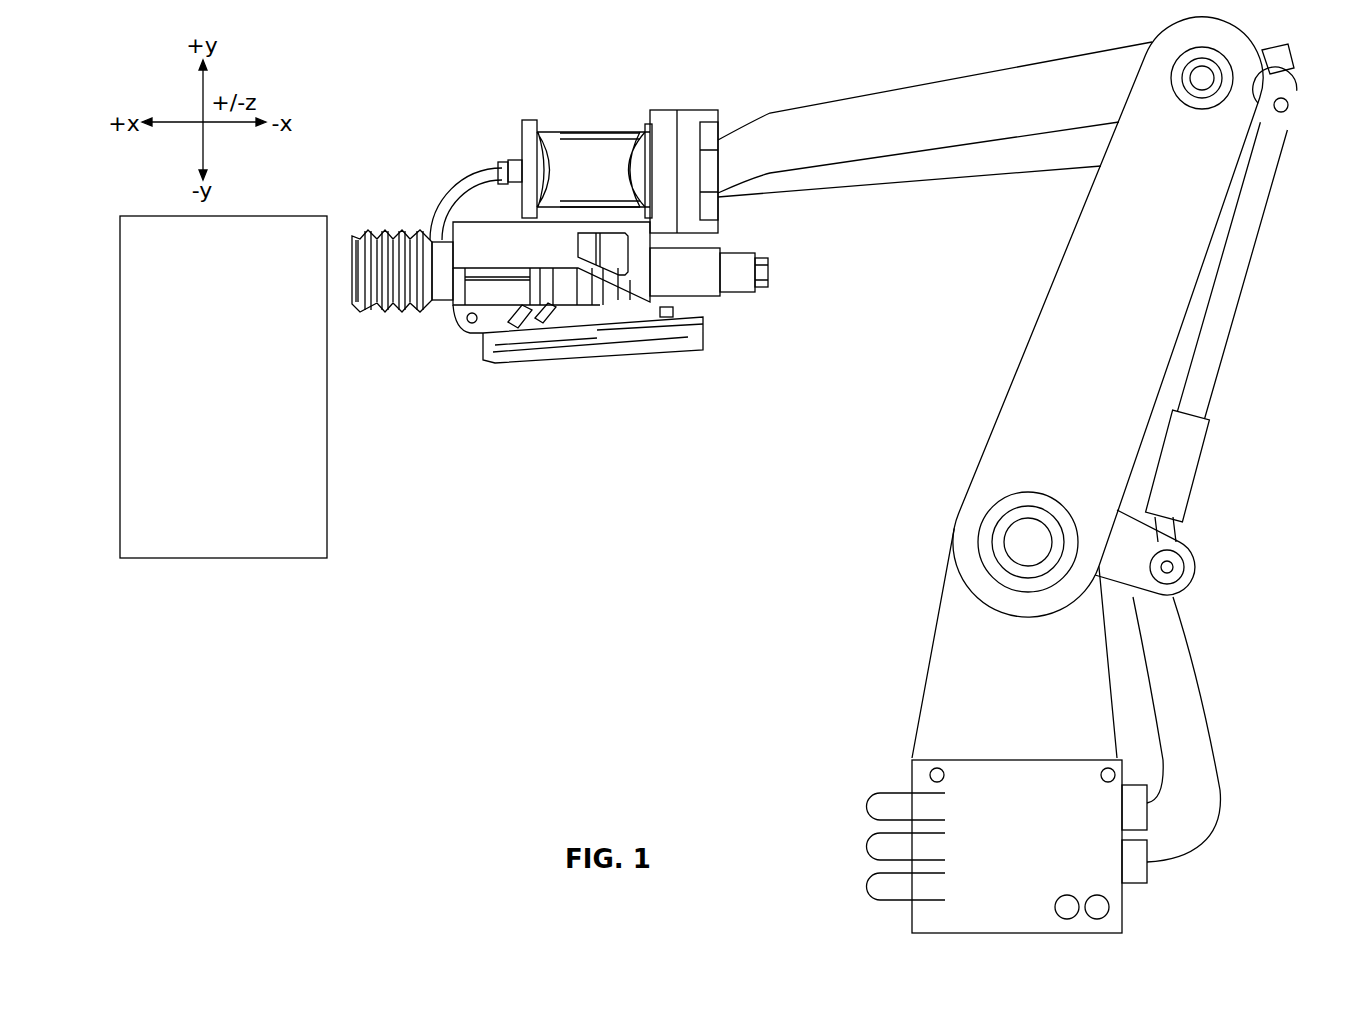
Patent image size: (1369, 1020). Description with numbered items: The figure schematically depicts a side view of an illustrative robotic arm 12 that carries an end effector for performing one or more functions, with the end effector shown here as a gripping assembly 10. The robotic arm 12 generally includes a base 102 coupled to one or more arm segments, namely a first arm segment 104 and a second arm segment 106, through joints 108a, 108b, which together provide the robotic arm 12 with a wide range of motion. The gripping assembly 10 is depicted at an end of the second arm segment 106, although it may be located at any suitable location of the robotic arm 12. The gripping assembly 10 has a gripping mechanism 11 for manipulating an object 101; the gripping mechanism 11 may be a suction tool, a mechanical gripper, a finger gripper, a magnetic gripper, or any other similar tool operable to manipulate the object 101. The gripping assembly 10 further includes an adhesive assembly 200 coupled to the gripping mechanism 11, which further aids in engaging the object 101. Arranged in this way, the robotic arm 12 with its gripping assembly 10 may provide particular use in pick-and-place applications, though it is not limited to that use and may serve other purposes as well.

The gripping assembly 10 is at (448, 158).
The gripping mechanism 11 is at (386, 320).
The robotic arm 12 is at (1038, 475).
The object 101 is at (204, 400).
The base 102 is at (1123, 915).
The first arm segment 104 is at (1024, 334).
The second arm segment 106 is at (868, 97).
The joint 108a is at (1035, 492).
The joint 108b is at (1197, 110).
The adhesive assembly 200 is at (570, 374).